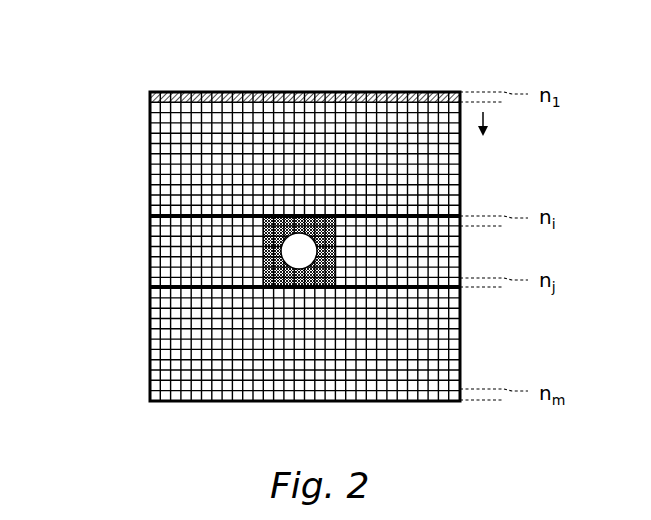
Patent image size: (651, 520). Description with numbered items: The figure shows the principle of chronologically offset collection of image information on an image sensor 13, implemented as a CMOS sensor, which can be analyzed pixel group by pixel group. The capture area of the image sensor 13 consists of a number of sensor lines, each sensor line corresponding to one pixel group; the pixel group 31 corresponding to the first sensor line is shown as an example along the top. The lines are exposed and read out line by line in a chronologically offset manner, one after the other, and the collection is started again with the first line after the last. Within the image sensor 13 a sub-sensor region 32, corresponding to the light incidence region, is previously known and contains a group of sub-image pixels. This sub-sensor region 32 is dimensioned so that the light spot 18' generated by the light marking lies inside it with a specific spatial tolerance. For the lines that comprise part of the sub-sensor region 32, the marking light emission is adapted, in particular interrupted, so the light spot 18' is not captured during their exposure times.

The image sensor 13 is at (315, 58).
The pixel group 31 is at (142, 85).
The sub-sensor region 32 is at (255, 216).
The light spot 18' is at (186, 262).